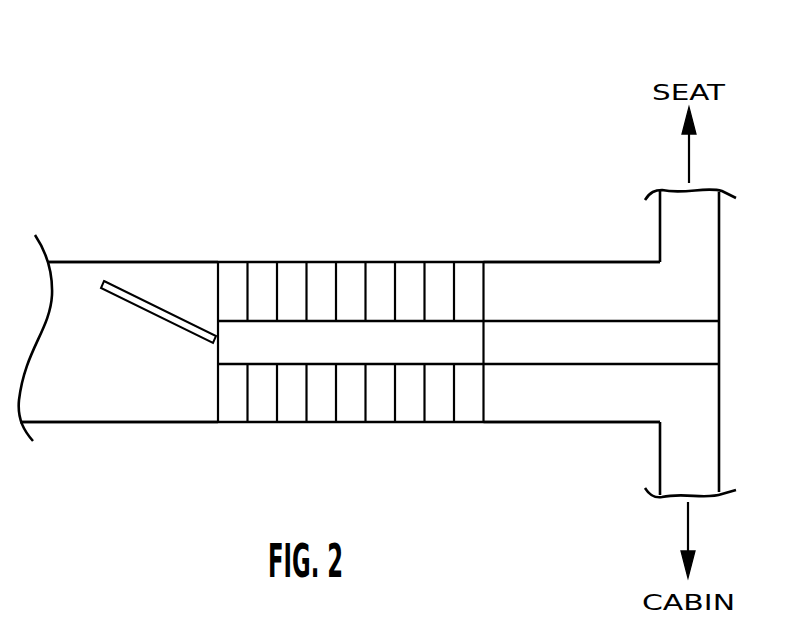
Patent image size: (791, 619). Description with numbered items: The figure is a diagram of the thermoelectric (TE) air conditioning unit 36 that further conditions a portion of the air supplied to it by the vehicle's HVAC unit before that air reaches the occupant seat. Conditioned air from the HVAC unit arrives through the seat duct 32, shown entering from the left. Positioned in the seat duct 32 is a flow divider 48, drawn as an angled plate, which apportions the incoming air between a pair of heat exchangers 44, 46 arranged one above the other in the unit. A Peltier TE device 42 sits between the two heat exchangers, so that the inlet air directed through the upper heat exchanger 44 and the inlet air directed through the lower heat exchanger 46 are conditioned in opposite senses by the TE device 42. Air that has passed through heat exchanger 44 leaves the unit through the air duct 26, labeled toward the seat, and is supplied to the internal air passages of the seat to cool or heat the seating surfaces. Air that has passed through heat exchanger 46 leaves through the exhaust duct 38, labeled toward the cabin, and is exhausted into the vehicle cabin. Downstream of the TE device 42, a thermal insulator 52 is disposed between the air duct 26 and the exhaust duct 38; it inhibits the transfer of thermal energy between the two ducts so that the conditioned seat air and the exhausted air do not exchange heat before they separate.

The air duct 26 is at (573, 268).
The seat duct 32 is at (108, 262).
The thermoelectric air conditioning unit 36 is at (478, 132).
The exhaust duct 38 is at (572, 415).
The Peltier TE device 42 is at (388, 338).
The heat exchanger 44 is at (293, 278).
The heat exchanger 46 is at (253, 385).
The flow divider 48 is at (145, 308).
The thermal insulator 52 is at (716, 340).